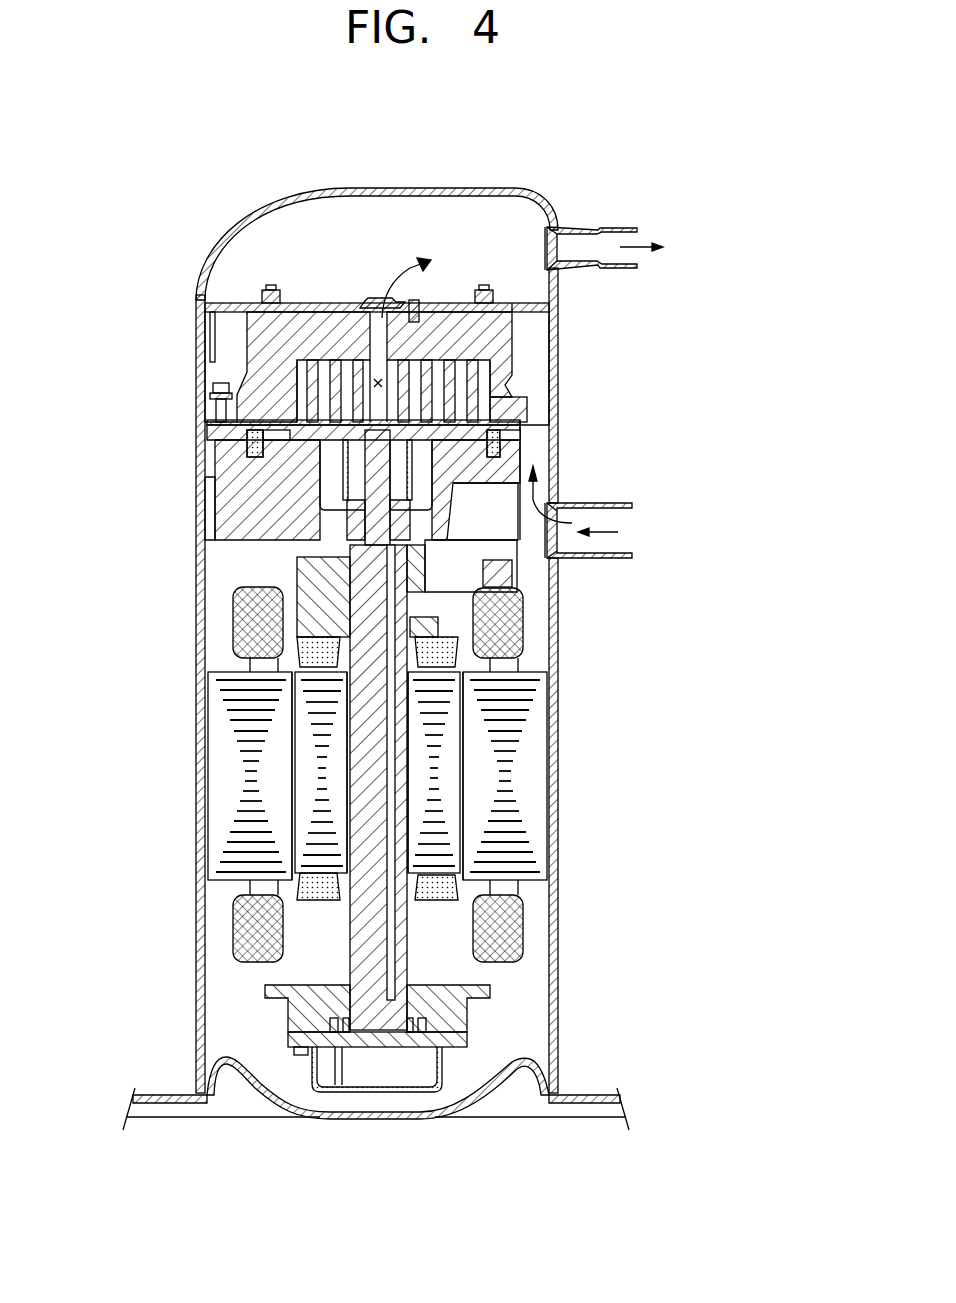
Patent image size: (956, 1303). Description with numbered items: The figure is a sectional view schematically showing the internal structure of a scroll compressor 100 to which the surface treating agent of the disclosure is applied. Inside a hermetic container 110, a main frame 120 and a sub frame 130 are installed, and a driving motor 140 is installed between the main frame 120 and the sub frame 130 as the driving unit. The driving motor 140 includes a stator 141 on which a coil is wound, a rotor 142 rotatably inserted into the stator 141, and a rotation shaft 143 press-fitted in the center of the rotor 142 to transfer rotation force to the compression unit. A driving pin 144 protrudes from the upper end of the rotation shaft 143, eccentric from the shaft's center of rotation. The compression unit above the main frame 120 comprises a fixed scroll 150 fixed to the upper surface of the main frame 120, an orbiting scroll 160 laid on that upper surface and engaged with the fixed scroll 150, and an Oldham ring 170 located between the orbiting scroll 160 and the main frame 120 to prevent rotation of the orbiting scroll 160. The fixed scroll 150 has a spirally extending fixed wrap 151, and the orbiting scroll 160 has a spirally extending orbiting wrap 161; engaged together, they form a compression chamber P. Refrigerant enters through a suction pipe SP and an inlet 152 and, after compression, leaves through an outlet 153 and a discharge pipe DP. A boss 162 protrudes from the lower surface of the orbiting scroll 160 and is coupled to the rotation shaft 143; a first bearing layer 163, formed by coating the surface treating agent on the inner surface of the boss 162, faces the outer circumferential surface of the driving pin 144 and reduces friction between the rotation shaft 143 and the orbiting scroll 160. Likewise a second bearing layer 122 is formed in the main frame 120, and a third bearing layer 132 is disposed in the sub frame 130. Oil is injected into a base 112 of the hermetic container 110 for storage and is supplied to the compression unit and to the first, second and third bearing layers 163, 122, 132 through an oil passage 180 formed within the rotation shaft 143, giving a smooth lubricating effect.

The compressor 100 is at (95, 224).
The hermetic container 110 is at (200, 276).
The base 112 is at (485, 1100).
The main frame 120 is at (278, 464).
The second bearing layer 122 is at (297, 573).
The sub frame 130 is at (290, 1015).
The third bearing layer 132 is at (350, 980).
The driving motor 140 is at (120, 700).
The stator 141 is at (220, 713).
The rotor 142 is at (307, 753).
The rotation shaft 143 is at (353, 790).
The driving pin 144 is at (522, 470).
The fixed scroll 150 is at (268, 333).
The fixed wrap 151 is at (323, 373).
The inlet 152 is at (522, 400).
The outlet 153 is at (367, 307).
The orbiting scroll 160 is at (290, 414).
The orbiting wrap 161 is at (305, 391).
The boss 162 is at (487, 452).
The first bearing layer 163 is at (343, 490).
The Oldham ring 170 is at (245, 441).
The oil passage 180 is at (387, 863).
The compression chamber P is at (378, 383).
The discharge pipe DP is at (615, 228).
The suction pipe SP is at (632, 522).